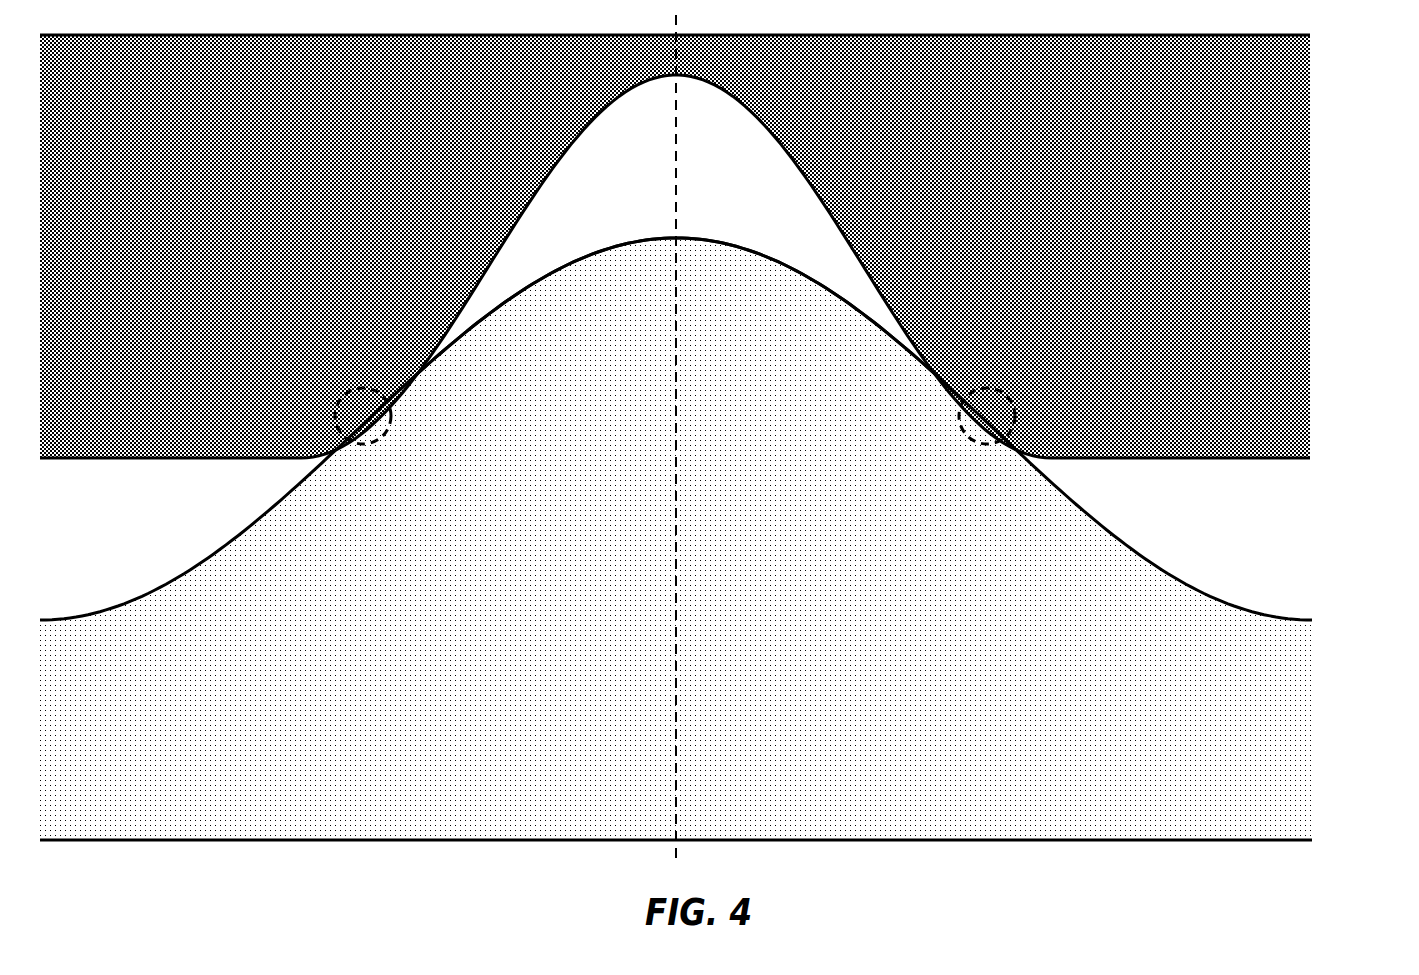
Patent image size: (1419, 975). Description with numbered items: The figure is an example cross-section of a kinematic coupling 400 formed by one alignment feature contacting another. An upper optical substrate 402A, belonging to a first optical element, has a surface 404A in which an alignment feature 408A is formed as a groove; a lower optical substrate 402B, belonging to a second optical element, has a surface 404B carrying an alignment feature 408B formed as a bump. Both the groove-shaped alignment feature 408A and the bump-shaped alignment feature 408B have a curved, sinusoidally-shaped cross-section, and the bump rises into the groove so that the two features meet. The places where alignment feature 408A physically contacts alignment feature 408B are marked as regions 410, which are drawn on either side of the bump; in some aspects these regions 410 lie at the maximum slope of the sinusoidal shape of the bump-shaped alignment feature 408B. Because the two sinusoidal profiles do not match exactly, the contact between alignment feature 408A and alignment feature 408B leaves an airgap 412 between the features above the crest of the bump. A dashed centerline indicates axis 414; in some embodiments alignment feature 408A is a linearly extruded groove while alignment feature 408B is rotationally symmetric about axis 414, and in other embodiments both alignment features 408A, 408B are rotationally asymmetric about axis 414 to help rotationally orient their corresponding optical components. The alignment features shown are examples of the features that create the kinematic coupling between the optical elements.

The kinematic coupling 400 is at (726, 438).
The optical substrate 402A is at (1288, 360).
The optical substrate 402B is at (1273, 739).
The surface 404A is at (1298, 460).
The surface 404B is at (1297, 620).
The alignment feature 408A is at (752, 102).
The alignment feature 408B is at (742, 292).
The region 410 is at (387, 427).
The airgap 412 is at (644, 194).
The axis 414 is at (678, 576).